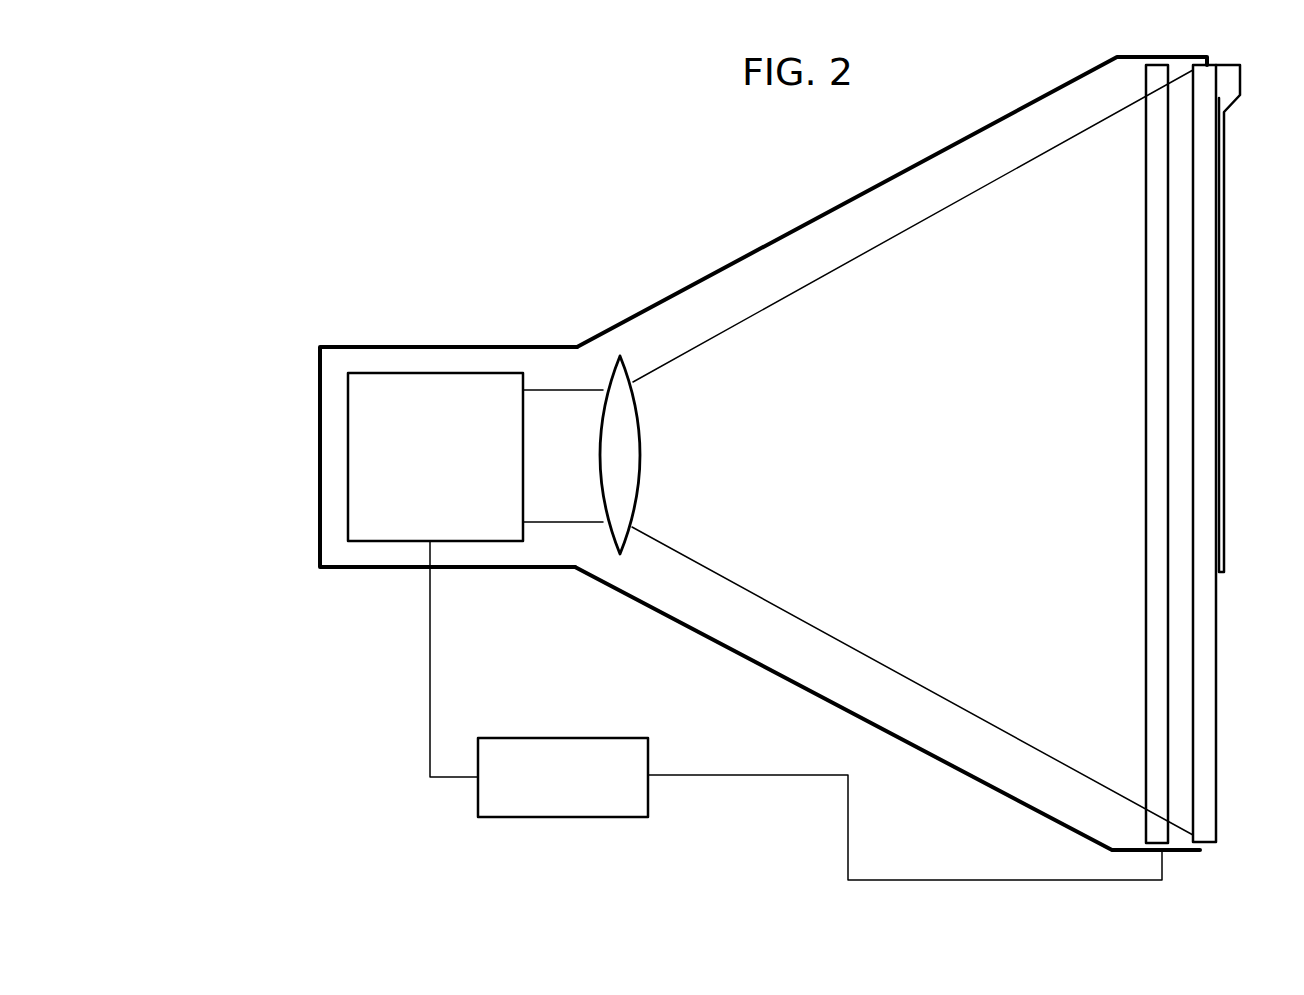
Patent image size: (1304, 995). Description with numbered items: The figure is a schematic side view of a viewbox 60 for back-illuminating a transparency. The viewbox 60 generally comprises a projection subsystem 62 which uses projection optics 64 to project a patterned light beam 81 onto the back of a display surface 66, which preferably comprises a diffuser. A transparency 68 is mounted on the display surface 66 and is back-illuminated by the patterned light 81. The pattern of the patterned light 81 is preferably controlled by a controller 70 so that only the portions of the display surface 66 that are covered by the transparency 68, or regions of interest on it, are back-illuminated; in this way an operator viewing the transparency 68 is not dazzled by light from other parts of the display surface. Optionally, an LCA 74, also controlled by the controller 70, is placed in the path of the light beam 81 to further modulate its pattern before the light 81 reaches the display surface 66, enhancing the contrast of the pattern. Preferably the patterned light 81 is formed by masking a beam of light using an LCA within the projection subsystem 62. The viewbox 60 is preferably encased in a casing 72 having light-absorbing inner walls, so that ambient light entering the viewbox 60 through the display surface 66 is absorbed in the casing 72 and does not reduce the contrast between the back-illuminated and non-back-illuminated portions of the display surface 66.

The viewbox 60 is at (370, 795).
The projection subsystem 62 is at (420, 372).
The projection optics 64 is at (637, 508).
The display surface 66 is at (1198, 848).
The transparency 68 is at (1223, 352).
The controller 70 is at (515, 738).
The casing 72 is at (812, 217).
The LCA 74 is at (1145, 590).
The patterned light beam 81 is at (743, 322).